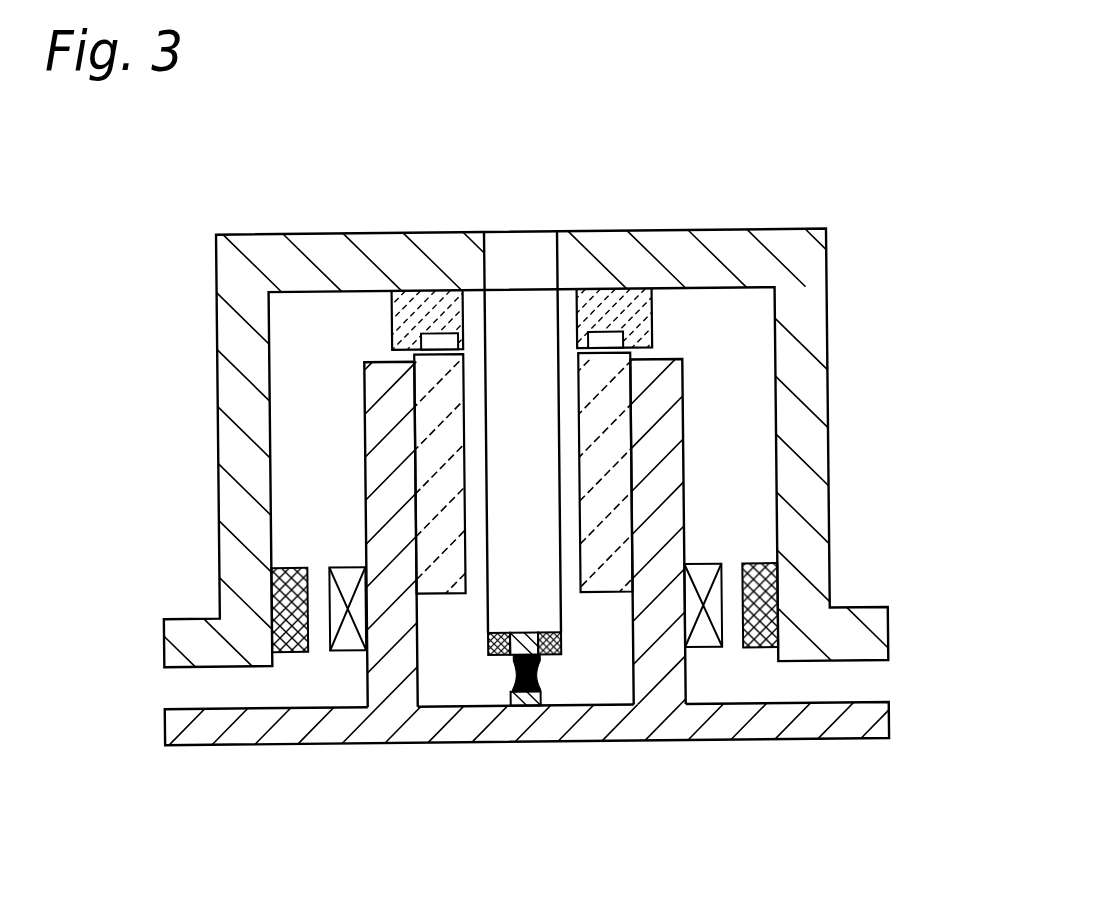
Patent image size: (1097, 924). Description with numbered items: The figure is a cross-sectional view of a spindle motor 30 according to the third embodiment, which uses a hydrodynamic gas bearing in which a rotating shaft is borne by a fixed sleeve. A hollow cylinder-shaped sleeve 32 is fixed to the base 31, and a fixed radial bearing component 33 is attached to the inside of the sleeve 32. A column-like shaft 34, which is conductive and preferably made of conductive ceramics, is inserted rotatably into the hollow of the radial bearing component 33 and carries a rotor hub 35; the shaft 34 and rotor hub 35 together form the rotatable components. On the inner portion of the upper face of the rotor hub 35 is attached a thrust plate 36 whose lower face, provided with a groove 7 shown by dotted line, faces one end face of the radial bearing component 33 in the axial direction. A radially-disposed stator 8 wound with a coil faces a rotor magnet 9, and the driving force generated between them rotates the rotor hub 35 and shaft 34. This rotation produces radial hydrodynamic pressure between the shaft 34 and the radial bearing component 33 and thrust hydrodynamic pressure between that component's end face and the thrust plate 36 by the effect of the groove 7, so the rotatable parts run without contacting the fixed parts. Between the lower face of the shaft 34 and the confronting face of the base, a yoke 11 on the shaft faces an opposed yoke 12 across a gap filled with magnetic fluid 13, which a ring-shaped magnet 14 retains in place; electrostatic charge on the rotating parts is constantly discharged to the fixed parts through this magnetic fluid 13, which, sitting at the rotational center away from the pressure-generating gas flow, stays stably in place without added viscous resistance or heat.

The spindle motor 30 is at (667, 113).
The base 31 is at (333, 728).
The sleeve 32 is at (367, 491).
The fixed radial bearing component 33 is at (616, 441).
The shaft 34 is at (528, 245).
The rotor hub 35 is at (804, 310).
The thrust plate 36 is at (652, 320).
The groove 7 is at (612, 334).
The stator 8 is at (697, 569).
The rotor magnet 9 is at (777, 594).
The yoke 11 is at (516, 636).
The yoke 12 is at (517, 695).
The magnetic fluid 13 is at (538, 677).
The magnet 14 is at (559, 642).